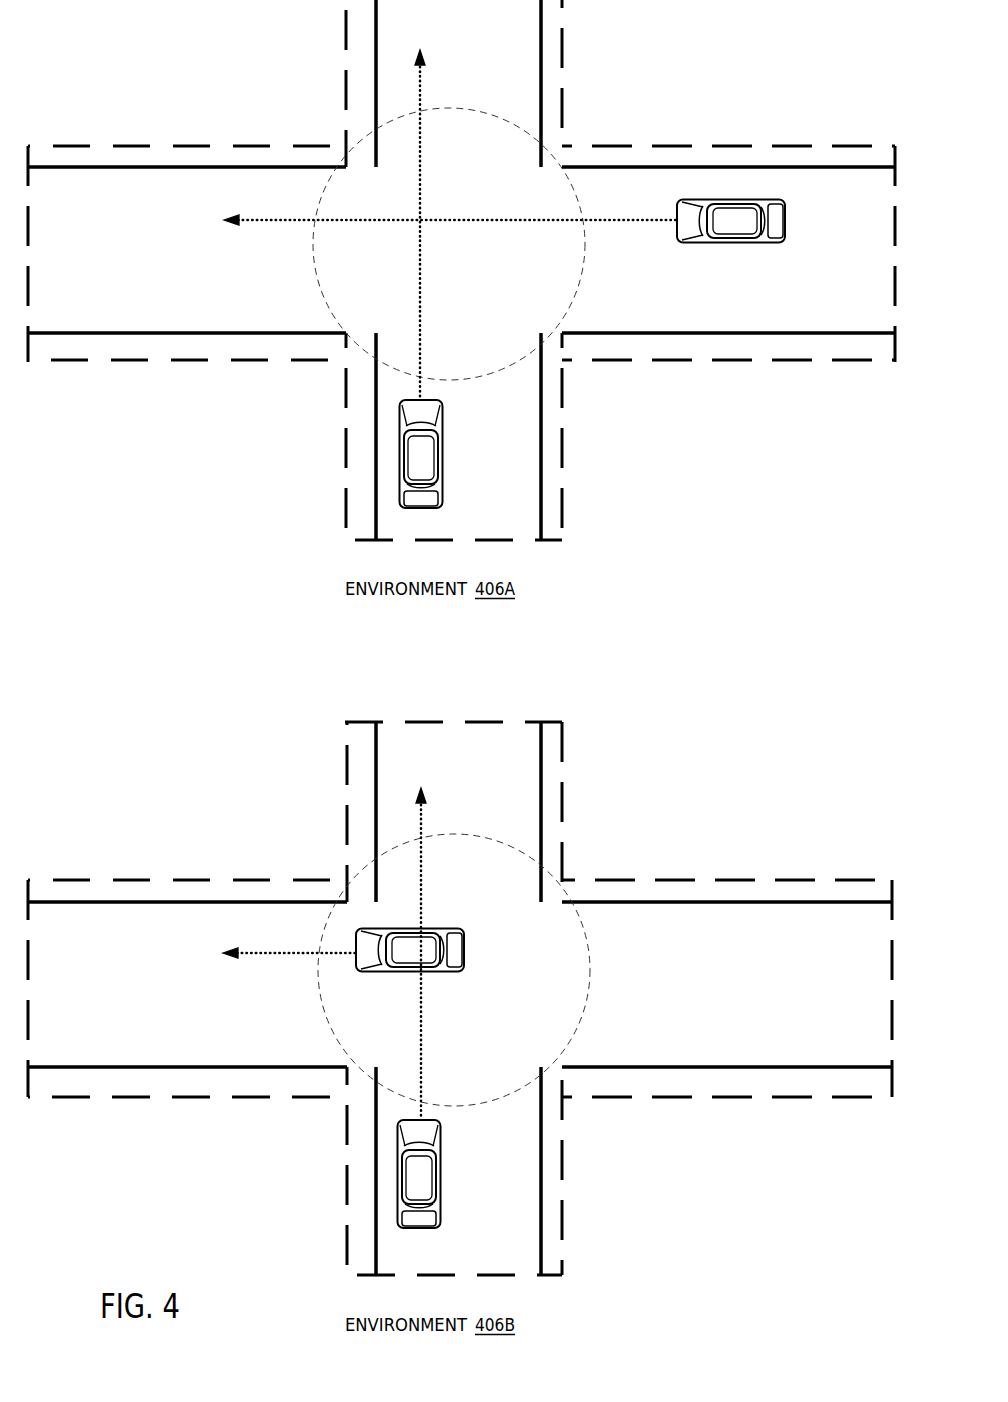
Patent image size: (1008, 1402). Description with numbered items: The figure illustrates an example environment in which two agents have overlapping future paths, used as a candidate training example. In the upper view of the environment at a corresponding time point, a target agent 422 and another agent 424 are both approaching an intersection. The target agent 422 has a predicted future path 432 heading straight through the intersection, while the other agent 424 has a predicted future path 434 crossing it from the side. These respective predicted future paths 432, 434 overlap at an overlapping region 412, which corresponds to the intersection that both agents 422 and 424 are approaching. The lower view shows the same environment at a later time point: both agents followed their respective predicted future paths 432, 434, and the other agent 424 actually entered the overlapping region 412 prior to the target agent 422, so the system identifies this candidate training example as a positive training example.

The overlapping region 412 is at (586, 243).
The target agent 422 is at (452, 453).
The other agent 424 is at (762, 250).
The predicted future path 432 is at (433, 78).
The predicted future path 434 is at (285, 228).